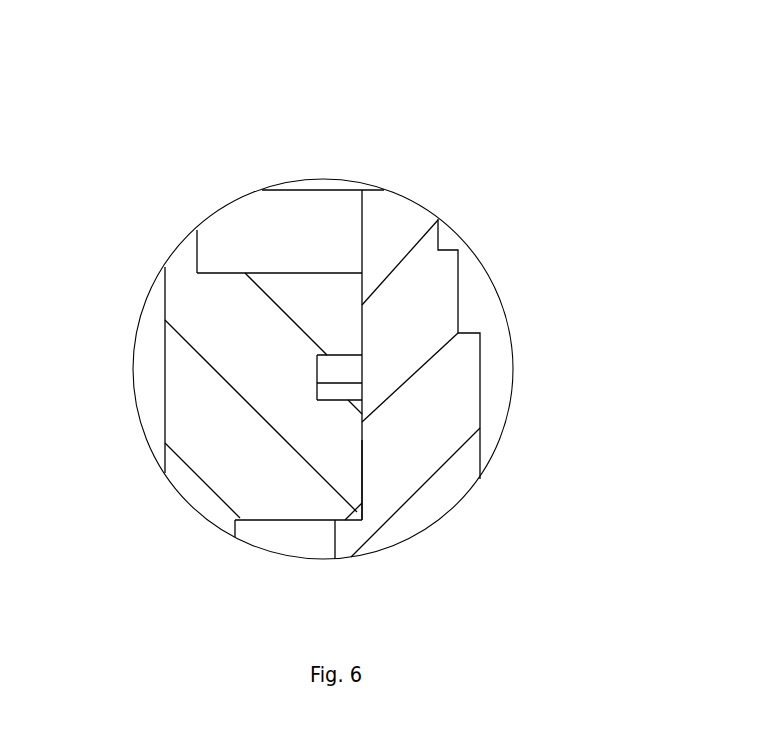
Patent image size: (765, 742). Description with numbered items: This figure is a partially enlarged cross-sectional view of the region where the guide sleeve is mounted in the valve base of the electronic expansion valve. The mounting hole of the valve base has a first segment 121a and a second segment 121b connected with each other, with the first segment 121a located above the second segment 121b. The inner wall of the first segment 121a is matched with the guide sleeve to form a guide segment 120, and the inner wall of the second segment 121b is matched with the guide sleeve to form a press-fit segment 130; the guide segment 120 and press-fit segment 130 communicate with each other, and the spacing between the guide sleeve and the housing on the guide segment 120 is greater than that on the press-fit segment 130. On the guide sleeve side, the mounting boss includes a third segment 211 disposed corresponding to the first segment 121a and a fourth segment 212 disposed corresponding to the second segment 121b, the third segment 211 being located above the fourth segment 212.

The guide segment 120 is at (362, 305).
The first segment 121a is at (372, 317).
The second segment 121b is at (372, 462).
The press-fit segment 130 is at (362, 480).
The third segment 211 is at (348, 318).
The fourth segment 212 is at (345, 453).